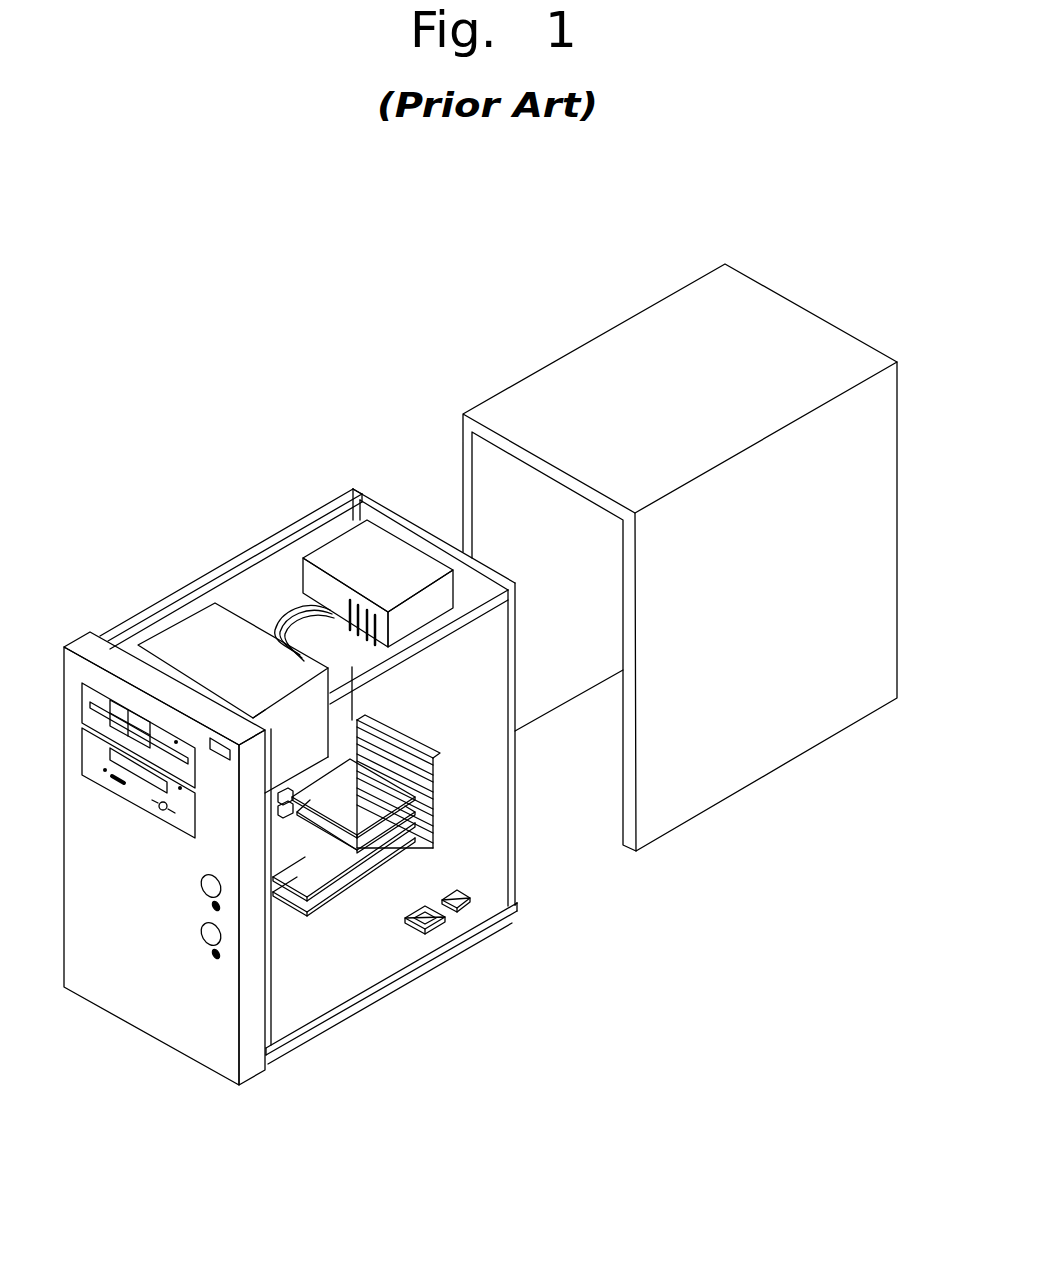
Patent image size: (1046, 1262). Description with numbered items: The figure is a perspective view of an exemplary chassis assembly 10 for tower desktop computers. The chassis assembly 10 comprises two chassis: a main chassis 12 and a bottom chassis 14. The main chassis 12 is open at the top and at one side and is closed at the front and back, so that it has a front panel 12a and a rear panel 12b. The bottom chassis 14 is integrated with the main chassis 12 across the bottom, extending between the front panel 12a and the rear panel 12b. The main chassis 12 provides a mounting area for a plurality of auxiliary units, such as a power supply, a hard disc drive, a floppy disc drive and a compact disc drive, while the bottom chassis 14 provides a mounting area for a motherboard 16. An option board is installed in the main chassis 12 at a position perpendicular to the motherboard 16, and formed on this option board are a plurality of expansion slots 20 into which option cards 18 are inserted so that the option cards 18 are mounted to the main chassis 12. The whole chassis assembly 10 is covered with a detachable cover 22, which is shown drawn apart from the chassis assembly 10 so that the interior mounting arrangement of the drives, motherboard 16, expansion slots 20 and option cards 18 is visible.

The chassis assembly 10 is at (300, 300).
The main chassis 12 is at (247, 540).
The front panel 12a is at (275, 997).
The rear panel 12b is at (498, 772).
The bottom chassis 14 is at (278, 1037).
The motherboard 16 is at (323, 978).
The option cards 18 is at (315, 877).
The expansion slots 20 is at (405, 784).
The detachable cover 22 is at (798, 723).